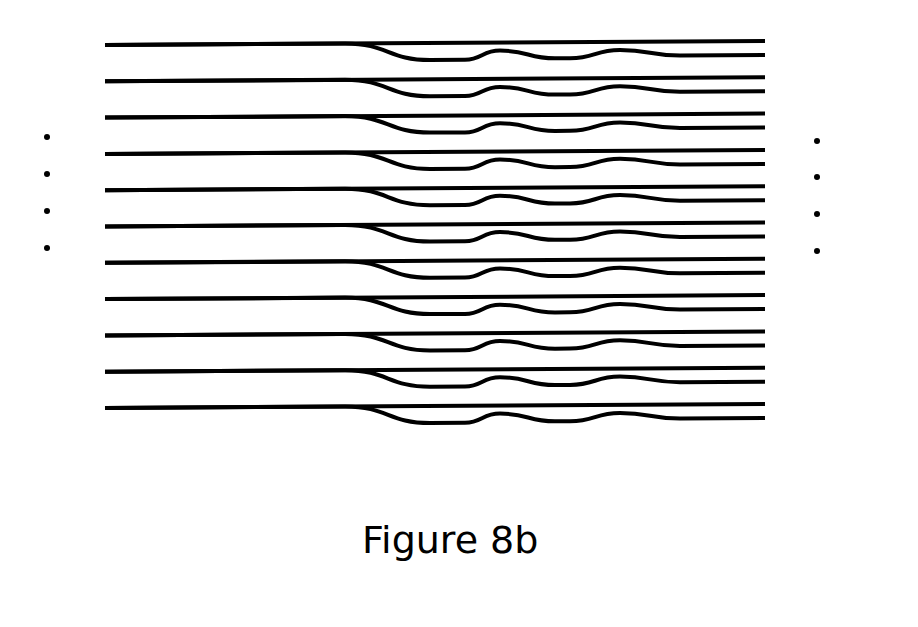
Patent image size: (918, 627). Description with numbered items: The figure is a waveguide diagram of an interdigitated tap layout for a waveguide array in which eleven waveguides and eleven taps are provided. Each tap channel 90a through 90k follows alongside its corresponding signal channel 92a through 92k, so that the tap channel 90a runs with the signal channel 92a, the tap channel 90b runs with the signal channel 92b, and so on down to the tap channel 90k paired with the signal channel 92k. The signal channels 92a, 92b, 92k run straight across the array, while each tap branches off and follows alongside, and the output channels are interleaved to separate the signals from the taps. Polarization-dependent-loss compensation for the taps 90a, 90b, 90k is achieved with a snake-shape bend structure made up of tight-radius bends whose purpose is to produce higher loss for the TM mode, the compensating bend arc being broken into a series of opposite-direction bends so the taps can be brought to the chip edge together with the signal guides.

The signal channel 92a is at (105, 45).
The signal channel 92b is at (105, 81).
The signal channel 92k is at (105, 408).
The tap channel 90a is at (766, 55).
The tap channel 90b is at (766, 91).
The tap channel 90k is at (766, 418).